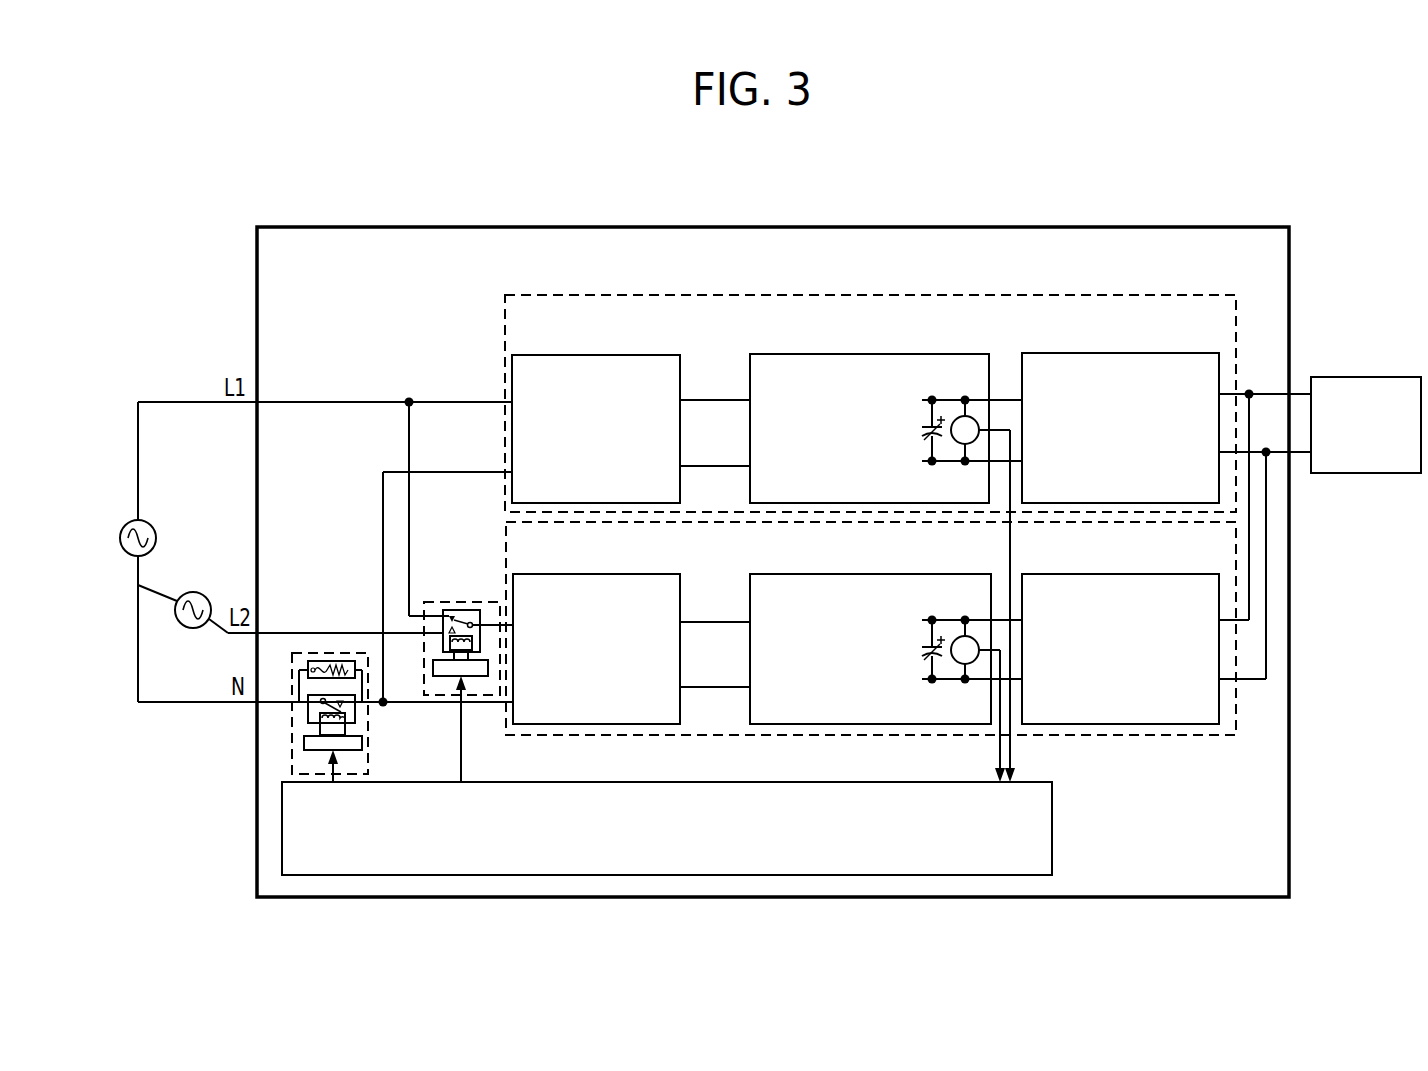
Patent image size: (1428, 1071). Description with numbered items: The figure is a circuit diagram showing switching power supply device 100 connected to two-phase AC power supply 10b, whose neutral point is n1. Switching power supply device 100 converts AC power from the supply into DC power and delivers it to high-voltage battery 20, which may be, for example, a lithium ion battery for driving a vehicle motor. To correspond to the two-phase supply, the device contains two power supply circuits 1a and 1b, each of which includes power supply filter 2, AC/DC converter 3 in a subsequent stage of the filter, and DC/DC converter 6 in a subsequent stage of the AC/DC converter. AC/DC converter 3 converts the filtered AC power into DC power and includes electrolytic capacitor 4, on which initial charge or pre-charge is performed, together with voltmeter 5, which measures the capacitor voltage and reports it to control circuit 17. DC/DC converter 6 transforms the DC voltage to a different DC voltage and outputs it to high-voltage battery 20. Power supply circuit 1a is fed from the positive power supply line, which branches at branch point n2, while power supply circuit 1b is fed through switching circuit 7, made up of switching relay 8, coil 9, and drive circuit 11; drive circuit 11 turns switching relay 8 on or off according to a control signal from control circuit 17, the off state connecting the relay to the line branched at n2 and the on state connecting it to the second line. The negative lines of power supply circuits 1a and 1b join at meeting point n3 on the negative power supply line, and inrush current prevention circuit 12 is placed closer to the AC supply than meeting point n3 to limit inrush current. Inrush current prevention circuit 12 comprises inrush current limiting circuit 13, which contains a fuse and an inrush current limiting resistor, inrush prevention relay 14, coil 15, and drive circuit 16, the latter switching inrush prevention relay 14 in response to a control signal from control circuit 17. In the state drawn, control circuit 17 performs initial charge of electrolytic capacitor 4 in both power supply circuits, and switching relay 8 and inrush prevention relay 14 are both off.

The switching power supply device 100 is at (395, 227).
The two-phase AC power supply 10b is at (170, 564).
The neutral point n1 is at (138, 585).
The branch point n2 is at (409, 400).
The meeting point n3 is at (385, 703).
The power supply circuit 1a is at (505, 318).
The power supply circuit 1b is at (506, 533).
The power supply filter 2 is at (597, 355).
The AC/DC converter 3 is at (833, 354).
The electrolytic capacitor 4 is at (924, 427).
The voltmeter 5 is at (958, 417).
The DC/DC converter 6 is at (1113, 353).
The switching circuit 7 is at (450, 666).
The switching relay 8 is at (462, 618).
The coil 9 is at (450, 656).
The drive circuit 11 is at (434, 670).
The inrush current prevention circuit 12 is at (318, 661).
The inrush current limiting circuit 13 is at (346, 690).
The inrush prevention relay 14 is at (342, 708).
The coil 15 is at (320, 729).
The drive circuit 16 is at (362, 745).
The control circuit 17 is at (1052, 822).
The high-voltage battery 20 is at (1350, 377).